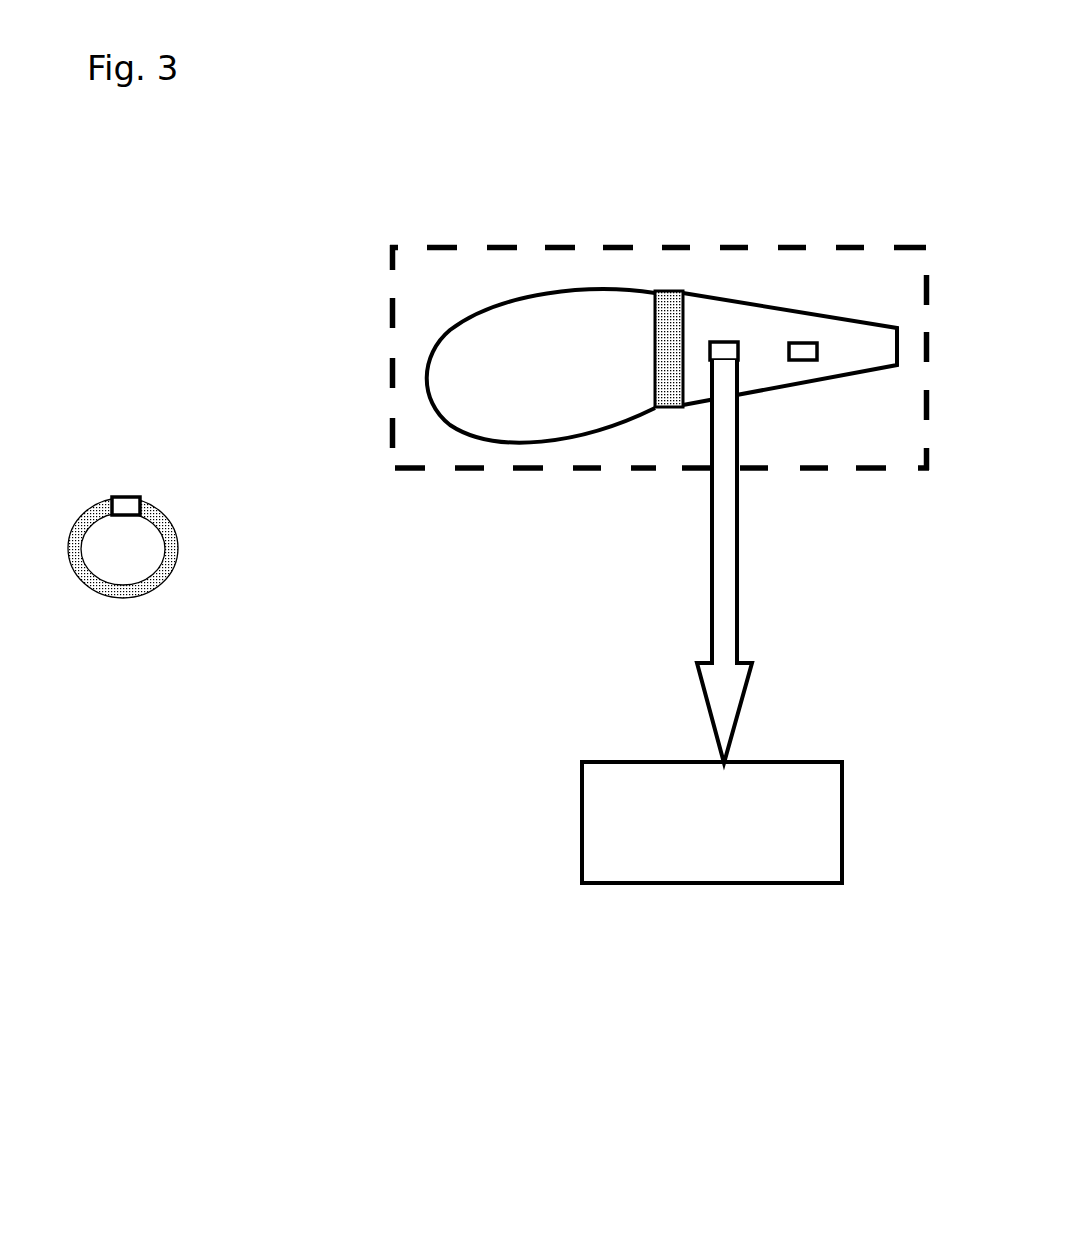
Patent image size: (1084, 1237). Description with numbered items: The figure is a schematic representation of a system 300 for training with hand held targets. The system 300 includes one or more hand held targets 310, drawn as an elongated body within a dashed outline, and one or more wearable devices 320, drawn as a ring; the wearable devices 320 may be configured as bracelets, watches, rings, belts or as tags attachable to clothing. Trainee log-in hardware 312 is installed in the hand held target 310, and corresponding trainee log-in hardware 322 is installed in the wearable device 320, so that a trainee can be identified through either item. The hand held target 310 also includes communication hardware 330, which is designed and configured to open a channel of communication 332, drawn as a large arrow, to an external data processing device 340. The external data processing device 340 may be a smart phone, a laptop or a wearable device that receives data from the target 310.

The system 300 is at (813, 65).
The hand held target 310 is at (503, 242).
The trainee log-in hardware 312 is at (797, 351).
The wearable device 320 is at (155, 580).
The trainee log-in hardware 322 is at (127, 497).
The communication hardware 330 is at (726, 350).
The channel of communication 332 is at (687, 561).
The external data processing device 340 is at (797, 842).